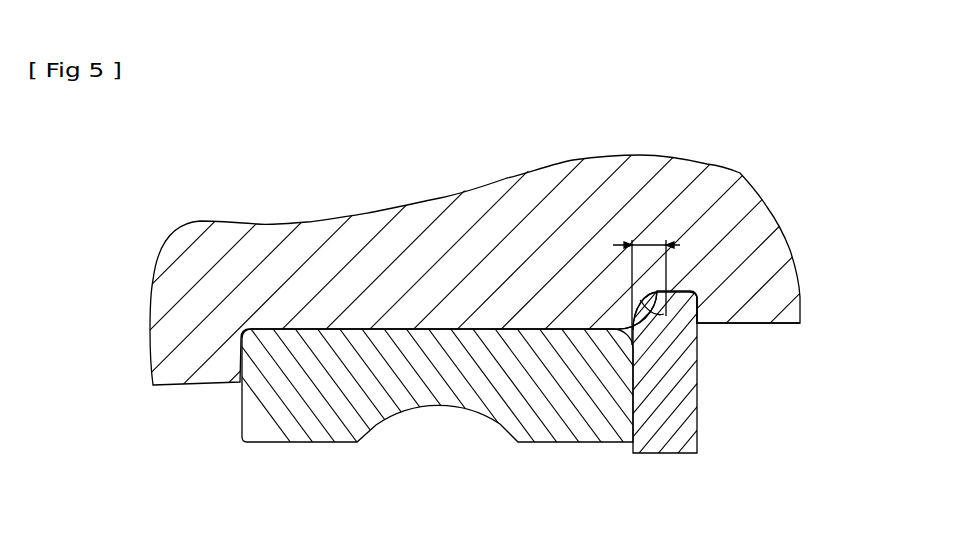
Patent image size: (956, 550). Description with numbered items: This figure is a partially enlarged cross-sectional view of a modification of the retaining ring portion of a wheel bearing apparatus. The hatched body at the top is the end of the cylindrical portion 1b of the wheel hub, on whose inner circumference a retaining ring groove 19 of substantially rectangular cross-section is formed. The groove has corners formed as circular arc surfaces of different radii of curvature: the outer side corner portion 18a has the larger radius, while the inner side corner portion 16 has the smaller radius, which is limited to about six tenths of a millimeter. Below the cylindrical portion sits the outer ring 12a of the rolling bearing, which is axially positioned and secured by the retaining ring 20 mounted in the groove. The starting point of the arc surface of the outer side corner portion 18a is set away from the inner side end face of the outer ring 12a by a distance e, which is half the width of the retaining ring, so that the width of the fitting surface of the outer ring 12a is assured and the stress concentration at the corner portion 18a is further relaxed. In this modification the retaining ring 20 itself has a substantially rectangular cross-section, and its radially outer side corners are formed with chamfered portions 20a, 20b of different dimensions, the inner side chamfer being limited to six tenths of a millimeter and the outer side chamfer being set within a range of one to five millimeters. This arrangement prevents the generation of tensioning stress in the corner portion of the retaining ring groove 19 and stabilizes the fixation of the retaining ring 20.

The cylindrical portion 1b is at (283, 265).
The outer ring 12a is at (278, 432).
The retaining ring 20 is at (668, 393).
The outer side corner portion 18a is at (622, 326).
The chamfered portion 20a is at (628, 300).
The retaining ring groove 19 is at (665, 312).
The chamfered portion 20b is at (688, 306).
The inner side corner portion 16 is at (685, 312).
The distance e is at (646, 280).